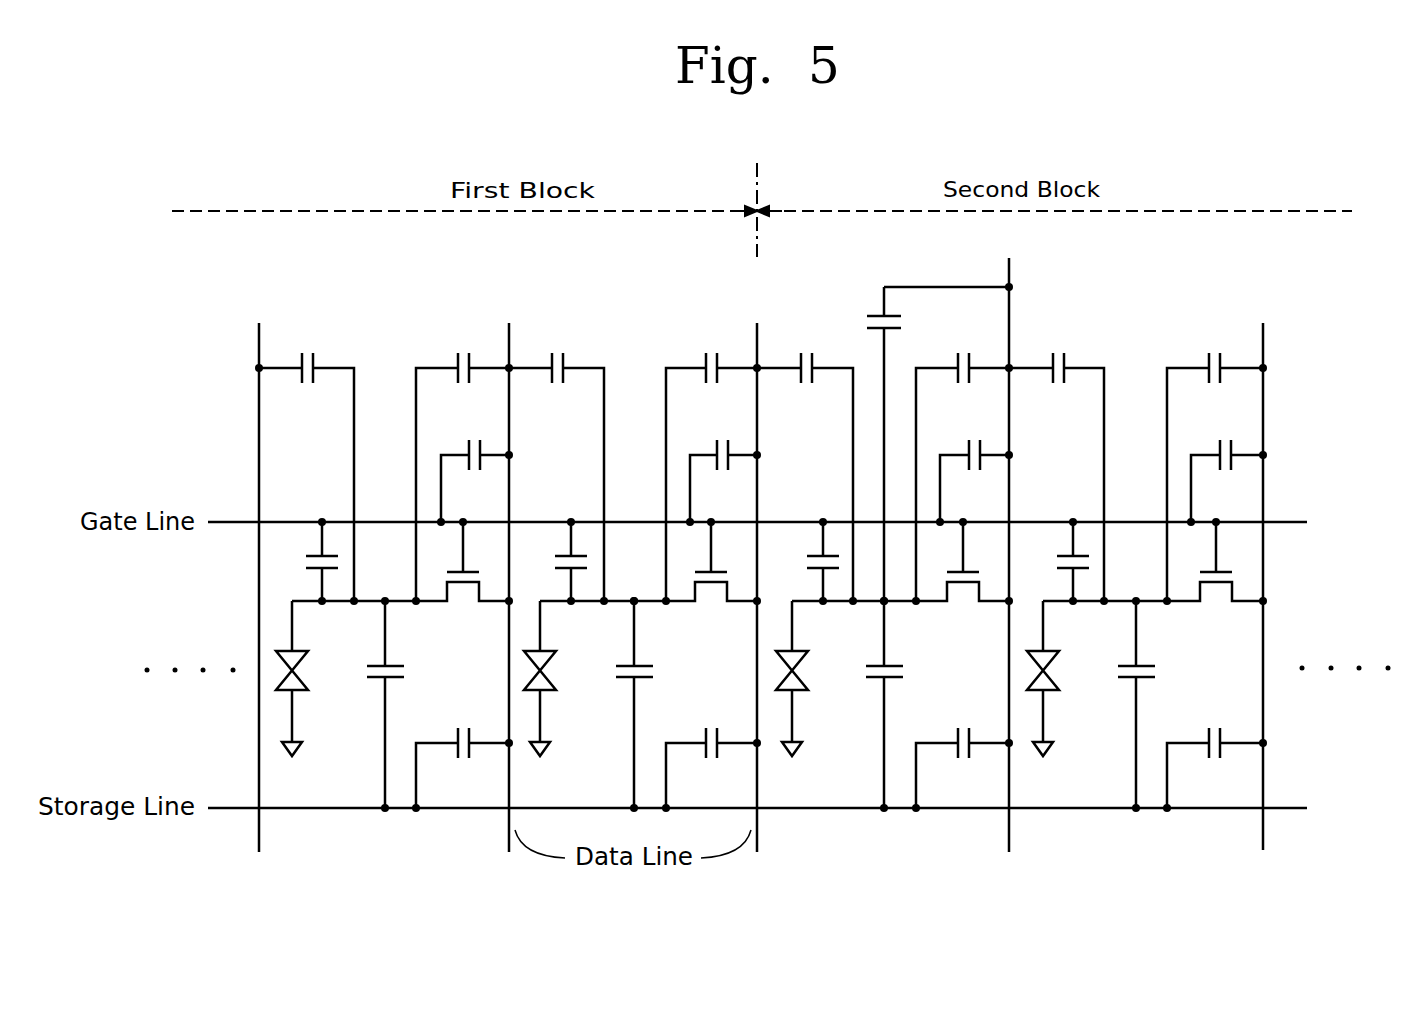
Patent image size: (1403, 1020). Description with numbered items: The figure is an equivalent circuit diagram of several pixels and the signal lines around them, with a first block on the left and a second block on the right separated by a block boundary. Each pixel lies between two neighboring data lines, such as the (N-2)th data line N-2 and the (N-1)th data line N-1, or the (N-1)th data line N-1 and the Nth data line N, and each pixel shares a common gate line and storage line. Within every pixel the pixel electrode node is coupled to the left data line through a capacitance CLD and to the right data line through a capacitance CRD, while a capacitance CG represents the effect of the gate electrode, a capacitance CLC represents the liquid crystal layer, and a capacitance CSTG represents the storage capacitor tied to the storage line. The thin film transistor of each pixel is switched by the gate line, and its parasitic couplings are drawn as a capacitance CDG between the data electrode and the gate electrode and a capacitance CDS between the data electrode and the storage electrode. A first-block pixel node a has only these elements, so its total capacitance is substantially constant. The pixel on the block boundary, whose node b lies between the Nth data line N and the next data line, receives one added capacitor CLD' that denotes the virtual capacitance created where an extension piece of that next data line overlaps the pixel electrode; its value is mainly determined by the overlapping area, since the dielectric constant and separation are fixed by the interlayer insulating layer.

The left data line capacitance CLD is at (681, 479).
The right data line capacitance CRD is at (839, 479).
The data-gate capacitance CDG is at (852, 483).
The gate capacitance CG is at (683, 561).
The liquid crystal capacitance CLC is at (686, 678).
The storage capacitance CSTG is at (787, 704).
The data-storage capacitance CDS is at (839, 770).
The added capacitor CLD' is at (940, 442).
The pixel node a is at (637, 605).
The boundary pixel node b is at (887, 605).
The (N-2)th data line N-2 is at (257, 575).
The (N-1)th data line N-1 is at (507, 575).
The Nth data line N is at (757, 575).